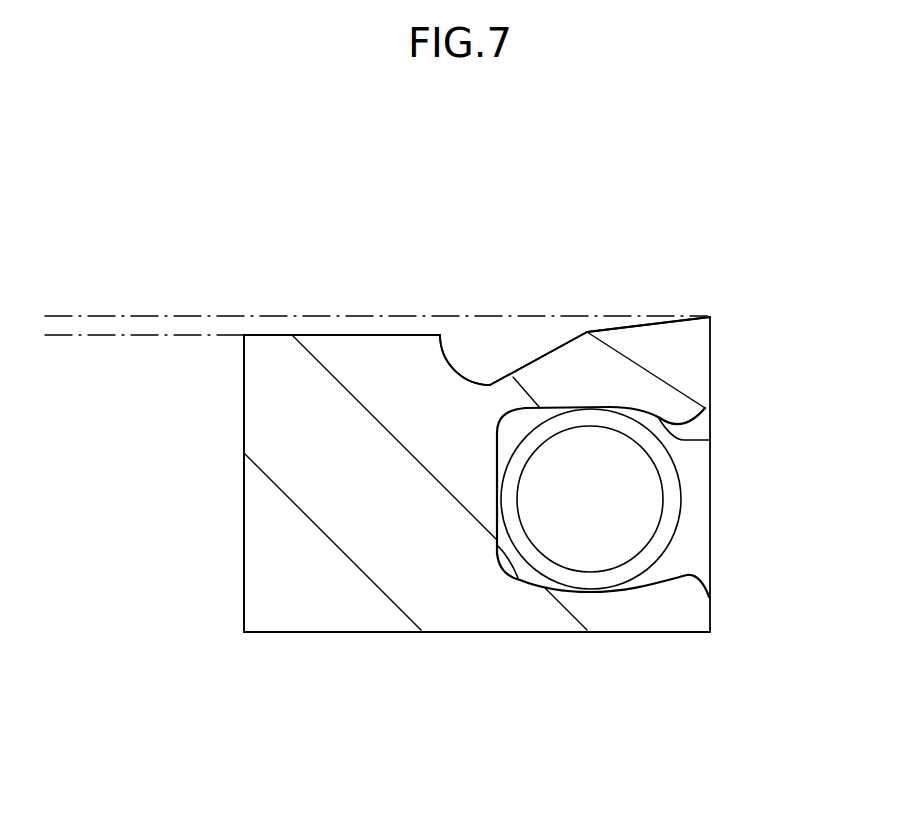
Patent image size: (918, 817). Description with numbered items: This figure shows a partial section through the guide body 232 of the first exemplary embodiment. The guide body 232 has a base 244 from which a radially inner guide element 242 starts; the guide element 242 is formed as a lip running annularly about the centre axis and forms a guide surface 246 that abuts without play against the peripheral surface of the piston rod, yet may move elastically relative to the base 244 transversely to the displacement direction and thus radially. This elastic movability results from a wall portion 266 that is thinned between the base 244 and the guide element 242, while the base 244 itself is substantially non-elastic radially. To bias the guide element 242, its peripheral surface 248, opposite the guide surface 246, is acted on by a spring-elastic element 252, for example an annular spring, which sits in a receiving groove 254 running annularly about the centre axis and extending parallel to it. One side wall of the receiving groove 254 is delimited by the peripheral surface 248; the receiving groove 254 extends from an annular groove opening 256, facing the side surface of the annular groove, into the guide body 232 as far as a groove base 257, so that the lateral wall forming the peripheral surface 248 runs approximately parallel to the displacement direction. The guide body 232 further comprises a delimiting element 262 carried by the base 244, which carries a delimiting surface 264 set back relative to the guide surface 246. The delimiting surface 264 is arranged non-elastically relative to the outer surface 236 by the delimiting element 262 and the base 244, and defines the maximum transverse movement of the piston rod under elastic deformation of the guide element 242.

The guide body 232 is at (292, 436).
The outer surface 236 is at (377, 633).
The guide element 242 is at (692, 368).
The base 244 is at (282, 528).
The guide surface 246 is at (693, 316).
The peripheral surface 248 is at (710, 440).
The spring-elastic element 252 is at (702, 485).
The receiving groove 254 is at (690, 551).
The annular groove opening 256 is at (709, 580).
The groove base 257 is at (519, 582).
The delimiting element 262 is at (285, 363).
The delimiting surface 264 is at (342, 335).
The wall portion 266 is at (507, 403).